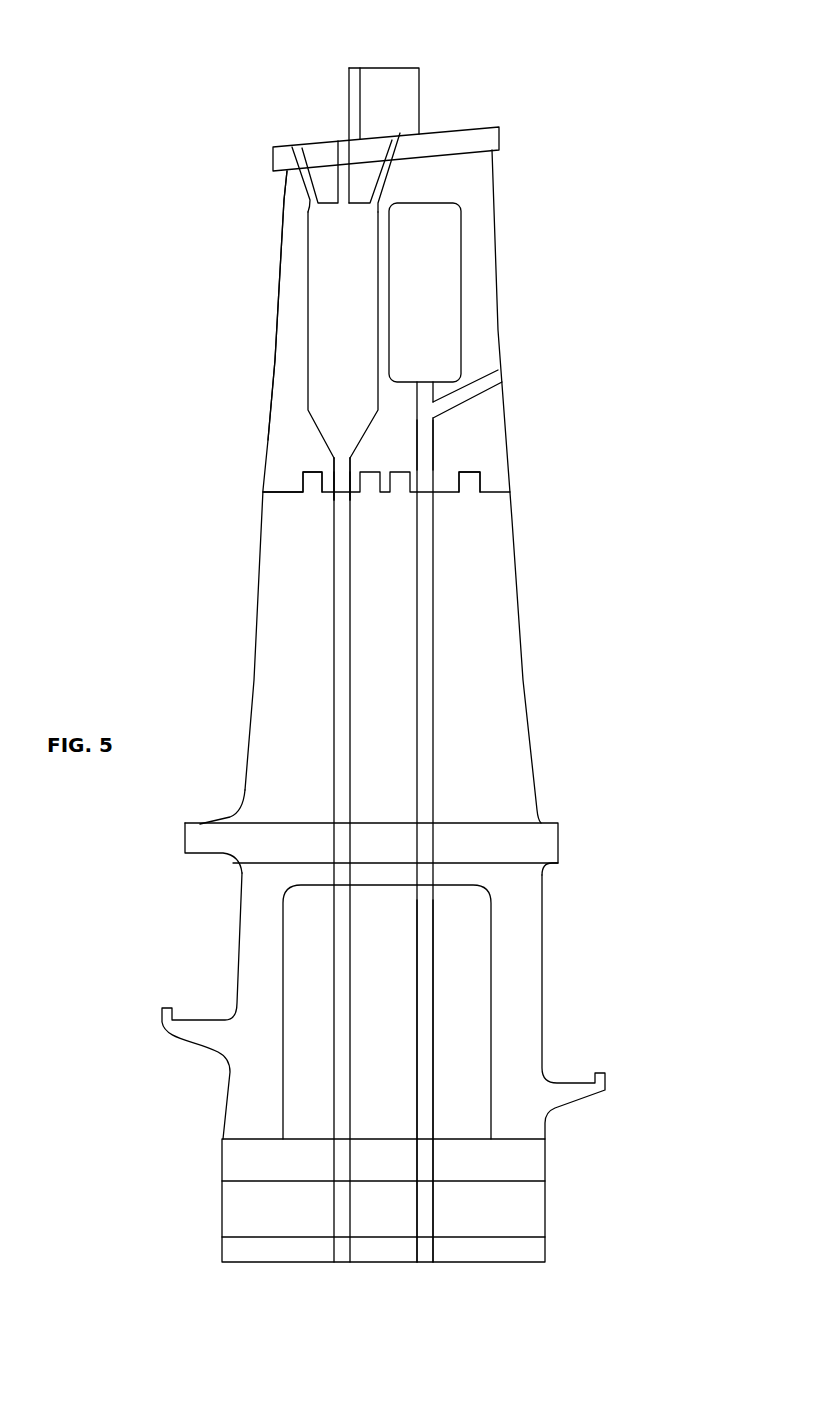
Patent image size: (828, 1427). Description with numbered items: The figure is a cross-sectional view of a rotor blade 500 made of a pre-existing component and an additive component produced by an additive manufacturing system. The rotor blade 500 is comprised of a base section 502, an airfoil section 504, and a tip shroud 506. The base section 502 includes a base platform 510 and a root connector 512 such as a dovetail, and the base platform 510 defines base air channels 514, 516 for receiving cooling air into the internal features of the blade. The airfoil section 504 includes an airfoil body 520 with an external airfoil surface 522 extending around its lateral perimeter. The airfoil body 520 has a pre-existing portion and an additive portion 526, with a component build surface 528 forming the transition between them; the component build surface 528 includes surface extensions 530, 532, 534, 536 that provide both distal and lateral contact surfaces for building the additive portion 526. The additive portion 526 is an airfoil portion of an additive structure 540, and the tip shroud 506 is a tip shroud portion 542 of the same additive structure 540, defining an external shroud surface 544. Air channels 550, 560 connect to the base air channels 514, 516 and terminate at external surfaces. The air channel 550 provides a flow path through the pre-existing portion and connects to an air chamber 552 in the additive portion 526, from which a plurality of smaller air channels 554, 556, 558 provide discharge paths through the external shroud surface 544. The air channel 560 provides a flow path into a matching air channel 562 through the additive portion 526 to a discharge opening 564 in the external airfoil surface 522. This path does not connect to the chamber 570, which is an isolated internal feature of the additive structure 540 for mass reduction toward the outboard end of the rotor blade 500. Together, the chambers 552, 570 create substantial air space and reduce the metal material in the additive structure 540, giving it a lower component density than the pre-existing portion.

The rotor blade 500 is at (170, 150).
The base section 502 is at (611, 1262).
The airfoil section 504 is at (611, 822).
The tip shroud 506 is at (376, 68).
The base platform 510 is at (203, 840).
The root connector 512 is at (222, 1203).
The base air channel 514 is at (338, 1075).
The base air channel 516 is at (428, 1042).
The airfoil body 520 is at (562, 451).
The external airfoil surface 522 is at (278, 342).
The additive portion 526 is at (298, 295).
The component build surface 528 is at (262, 492).
The surface extension 530 is at (308, 483).
The surface extension 532 is at (402, 483).
The surface extension 534 is at (370, 480).
The surface extension 536 is at (468, 482).
The additive structure 540 is at (540, 123).
The tip shroud portion 542 is at (268, 67).
The external shroud surface 544 is at (455, 130).
The air channel 550 is at (333, 725).
The air chamber 552 is at (328, 356).
The air channel 554 is at (298, 150).
The air channel 556 is at (341, 141).
The air channel 558 is at (400, 133).
The air channel 560 is at (435, 737).
The air channel 562 is at (427, 456).
The discharge opening 564 is at (492, 378).
The chamber 570 is at (436, 287).